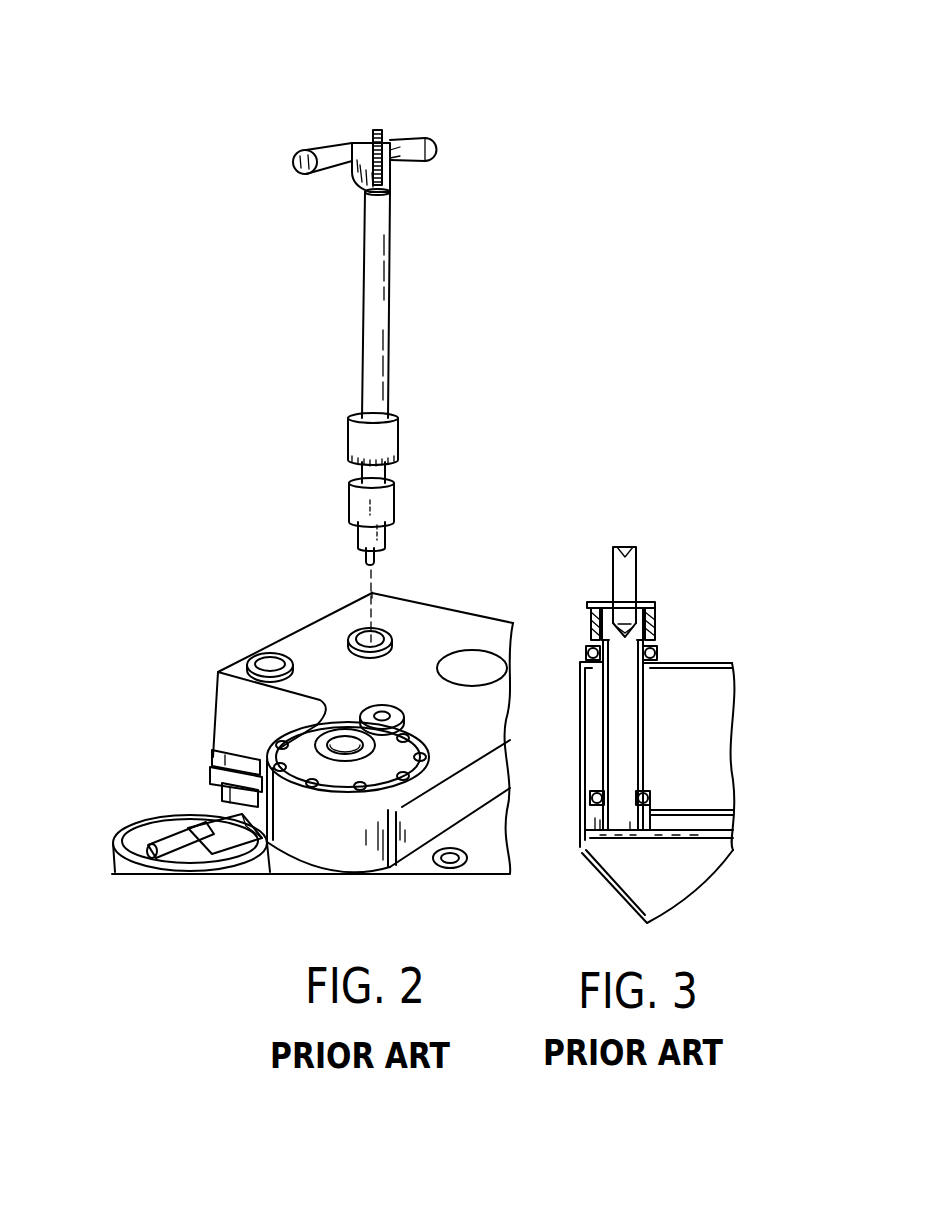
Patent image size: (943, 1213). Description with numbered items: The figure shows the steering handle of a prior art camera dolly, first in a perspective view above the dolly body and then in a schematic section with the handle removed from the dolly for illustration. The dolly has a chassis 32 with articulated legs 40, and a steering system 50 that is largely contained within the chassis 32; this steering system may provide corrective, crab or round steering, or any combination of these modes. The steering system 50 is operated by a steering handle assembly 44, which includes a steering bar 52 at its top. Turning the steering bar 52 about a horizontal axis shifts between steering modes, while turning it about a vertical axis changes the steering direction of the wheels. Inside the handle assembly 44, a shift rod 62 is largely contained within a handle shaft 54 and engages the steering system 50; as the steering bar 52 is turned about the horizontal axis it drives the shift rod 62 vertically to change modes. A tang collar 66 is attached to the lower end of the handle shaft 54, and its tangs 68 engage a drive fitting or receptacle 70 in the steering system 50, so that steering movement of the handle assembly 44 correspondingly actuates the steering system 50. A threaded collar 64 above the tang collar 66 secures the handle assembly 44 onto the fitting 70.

In FIG. 2, the chassis 32 is at (243, 736).
In FIG. 2, the articulated legs 40 is at (117, 867).
In FIG. 2, the steering handle assembly 44 is at (360, 348).
In FIG. 2, the steering system 50 is at (396, 633).
In FIG. 3, the steering system 50 is at (640, 768).
In FIG. 2, the steering bar 52 is at (300, 165).
In FIG. 2, the handle shaft 54 is at (386, 404).
In FIG. 2, the shift rod 62 is at (380, 132).
In FIG. 3, the shift rod 62 is at (636, 566).
In FIG. 2, the threaded collar 64 is at (398, 438).
In FIG. 3, the threaded collar 64 is at (655, 608).
In FIG. 2, the tang collar 66 is at (392, 507).
In FIG. 3, the tang collar 66 is at (653, 618).
In FIG. 2, the tangs 68 is at (380, 518).
In FIG. 3, the tangs 68 is at (620, 638).
In FIG. 2, the drive fitting 70 is at (346, 634).
In FIG. 3, the drive fitting 70 is at (627, 640).